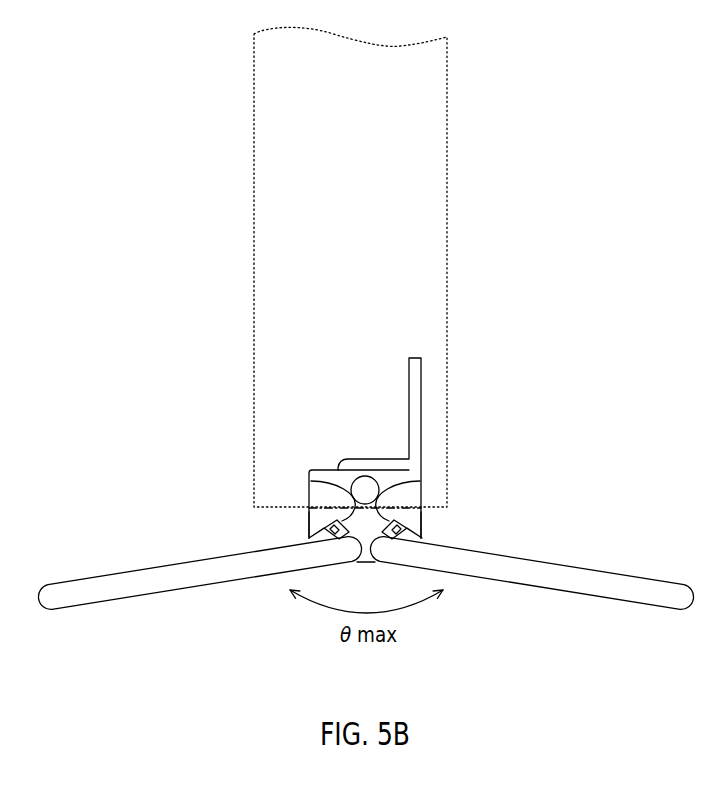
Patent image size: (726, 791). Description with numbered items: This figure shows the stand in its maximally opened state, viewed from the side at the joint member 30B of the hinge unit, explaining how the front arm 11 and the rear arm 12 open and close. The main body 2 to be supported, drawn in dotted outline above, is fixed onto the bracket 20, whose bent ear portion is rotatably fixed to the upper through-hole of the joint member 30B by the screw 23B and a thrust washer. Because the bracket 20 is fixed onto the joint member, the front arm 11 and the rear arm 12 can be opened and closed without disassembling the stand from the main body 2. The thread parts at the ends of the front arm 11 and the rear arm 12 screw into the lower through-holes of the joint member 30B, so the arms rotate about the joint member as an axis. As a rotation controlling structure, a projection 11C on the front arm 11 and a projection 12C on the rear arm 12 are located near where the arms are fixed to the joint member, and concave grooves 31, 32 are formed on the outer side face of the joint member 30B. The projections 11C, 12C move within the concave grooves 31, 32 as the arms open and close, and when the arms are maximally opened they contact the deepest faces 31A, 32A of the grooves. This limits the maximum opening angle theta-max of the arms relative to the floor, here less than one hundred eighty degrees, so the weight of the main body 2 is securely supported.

The main body 2 is at (448, 88).
The bracket 20 is at (410, 410).
The screw 23B is at (364, 486).
The joint member 30B is at (330, 468).
The concave groove 31 is at (340, 510).
The concave groove 32 is at (400, 511).
The deepest face 31A is at (332, 486).
The deepest face 32A is at (410, 484).
The front arm 11 is at (102, 586).
The rear arm 12 is at (627, 585).
The projection 11C is at (324, 528).
The projection 12C is at (407, 528).